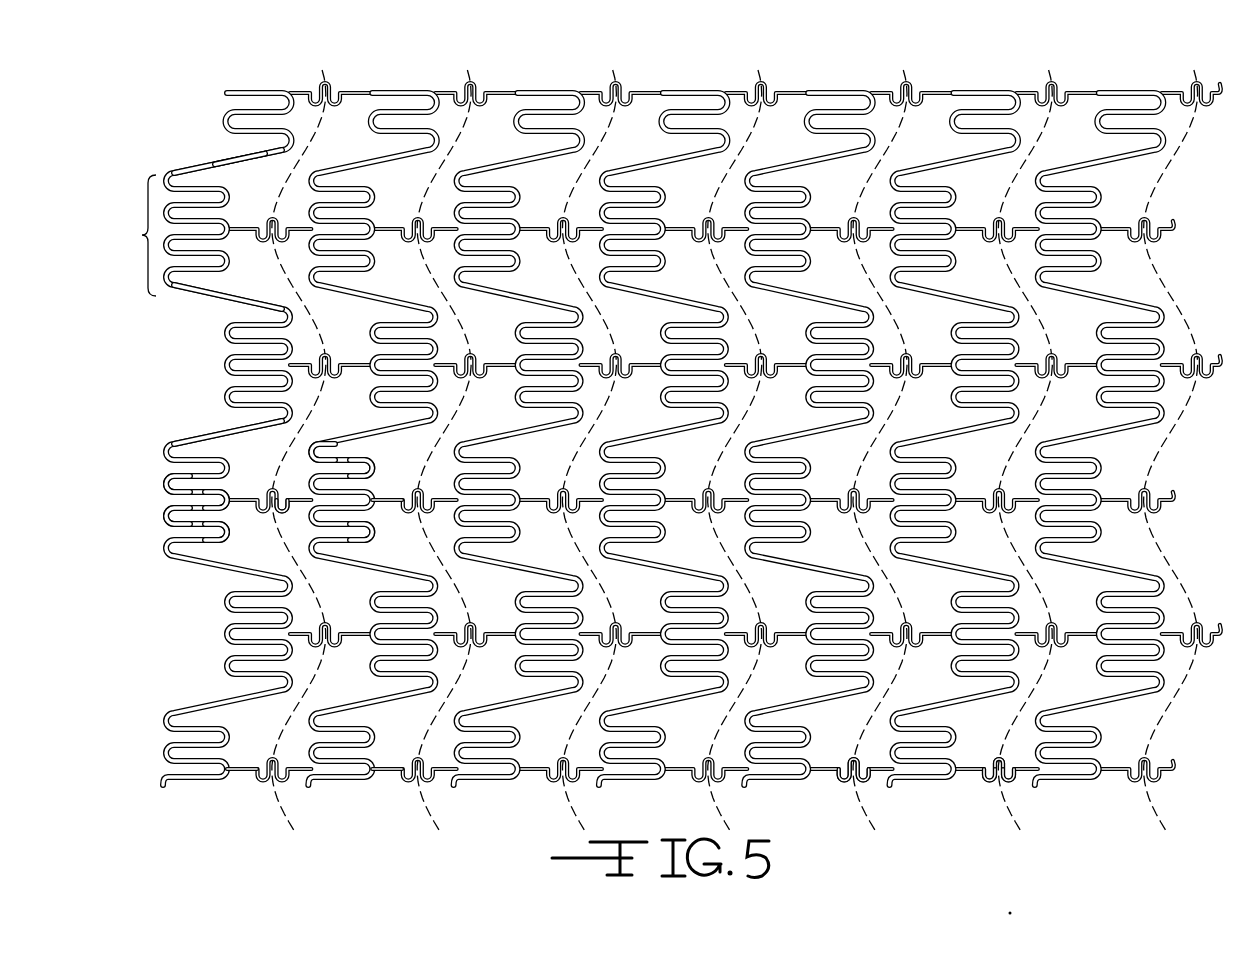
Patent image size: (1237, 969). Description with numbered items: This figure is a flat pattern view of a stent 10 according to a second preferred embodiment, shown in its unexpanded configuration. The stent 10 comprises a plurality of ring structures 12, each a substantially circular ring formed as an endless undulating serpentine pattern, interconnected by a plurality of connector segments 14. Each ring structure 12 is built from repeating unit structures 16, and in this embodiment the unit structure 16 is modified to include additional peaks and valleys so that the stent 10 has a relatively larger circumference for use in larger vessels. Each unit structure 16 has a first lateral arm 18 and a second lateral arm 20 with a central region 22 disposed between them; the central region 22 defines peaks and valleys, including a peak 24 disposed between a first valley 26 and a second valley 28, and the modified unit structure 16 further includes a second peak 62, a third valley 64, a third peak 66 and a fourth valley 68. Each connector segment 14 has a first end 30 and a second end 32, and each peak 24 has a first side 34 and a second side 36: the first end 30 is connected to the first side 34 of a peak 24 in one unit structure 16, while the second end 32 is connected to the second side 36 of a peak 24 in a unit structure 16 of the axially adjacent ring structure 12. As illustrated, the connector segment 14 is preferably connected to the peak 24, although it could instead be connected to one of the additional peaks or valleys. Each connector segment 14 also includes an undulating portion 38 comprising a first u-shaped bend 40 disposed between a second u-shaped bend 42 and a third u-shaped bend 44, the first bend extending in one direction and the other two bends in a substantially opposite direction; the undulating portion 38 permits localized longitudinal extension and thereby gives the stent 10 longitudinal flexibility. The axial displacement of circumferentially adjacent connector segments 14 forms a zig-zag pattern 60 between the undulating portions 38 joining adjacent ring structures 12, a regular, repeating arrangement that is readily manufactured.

The stent 10 is at (663, 442).
The ring structure 12 is at (249, 86).
The connector segment 14 is at (238, 772).
The unit structure 16 is at (210, 160).
The first lateral arm 18 is at (241, 164).
The second lateral arm 20 is at (231, 296).
The central region 22 is at (142, 236).
The peak 24 is at (229, 492).
The first valley 26 is at (165, 483).
The second valley 28 is at (167, 513).
The first end 30 is at (373, 766).
The second end 32 is at (520, 766).
The first side 34 is at (229, 508).
The second side 36 is at (374, 498).
The undulating portion 38 is at (860, 790).
The first u-shaped bend 40 is at (1001, 753).
The second u-shaped bend 42 is at (993, 780).
The third u-shaped bend 44 is at (1015, 782).
The zig-zag pattern 60 is at (445, 817).
The second peak 62 is at (369, 478).
The third valley 64 is at (313, 451).
The third peak 66 is at (373, 528).
The fourth valley 68 is at (282, 510).